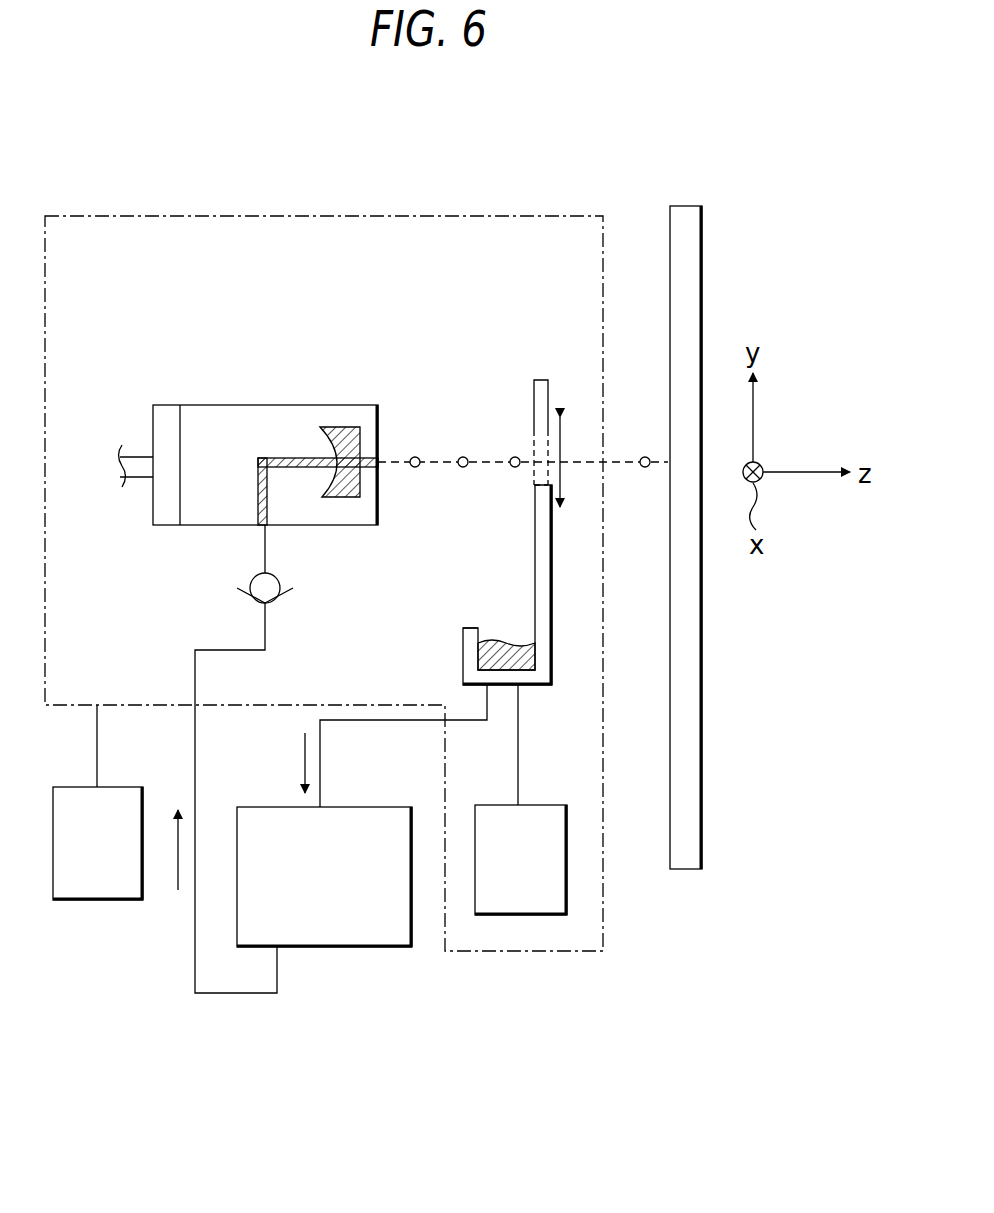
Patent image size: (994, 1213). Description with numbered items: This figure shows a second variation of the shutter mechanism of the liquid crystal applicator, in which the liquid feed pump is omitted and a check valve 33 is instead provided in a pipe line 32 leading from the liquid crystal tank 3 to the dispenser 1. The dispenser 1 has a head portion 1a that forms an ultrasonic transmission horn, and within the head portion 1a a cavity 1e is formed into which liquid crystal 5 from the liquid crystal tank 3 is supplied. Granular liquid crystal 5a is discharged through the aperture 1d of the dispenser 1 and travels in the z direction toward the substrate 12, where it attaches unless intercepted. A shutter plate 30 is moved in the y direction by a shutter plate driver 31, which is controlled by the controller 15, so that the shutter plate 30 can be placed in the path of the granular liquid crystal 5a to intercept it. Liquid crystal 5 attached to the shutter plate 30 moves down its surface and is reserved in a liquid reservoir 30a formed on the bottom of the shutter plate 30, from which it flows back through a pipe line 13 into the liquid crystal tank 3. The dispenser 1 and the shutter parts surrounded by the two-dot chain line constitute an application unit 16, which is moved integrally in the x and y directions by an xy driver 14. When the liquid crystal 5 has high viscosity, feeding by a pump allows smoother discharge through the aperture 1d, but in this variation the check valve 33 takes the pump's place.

The dispenser 1 is at (249, 464).
The head portion 1a is at (203, 527).
The aperture 1d is at (380, 470).
The cavity 1e is at (340, 497).
The liquid crystal tank 3 is at (325, 947).
The liquid crystal 5 is at (510, 643).
The granular liquid crystal 5a is at (464, 455).
The substrate 12 is at (702, 248).
The pipe line 13 is at (320, 760).
The xy driver 14 is at (97, 900).
The controller 15 is at (521, 915).
The application unit 16 is at (167, 527).
The shutter plate 30 is at (545, 380).
The liquid reservoir 30a is at (481, 624).
The shutter plate driver 31 is at (567, 857).
The pipe line 32 is at (235, 995).
The check valve 33 is at (252, 602).